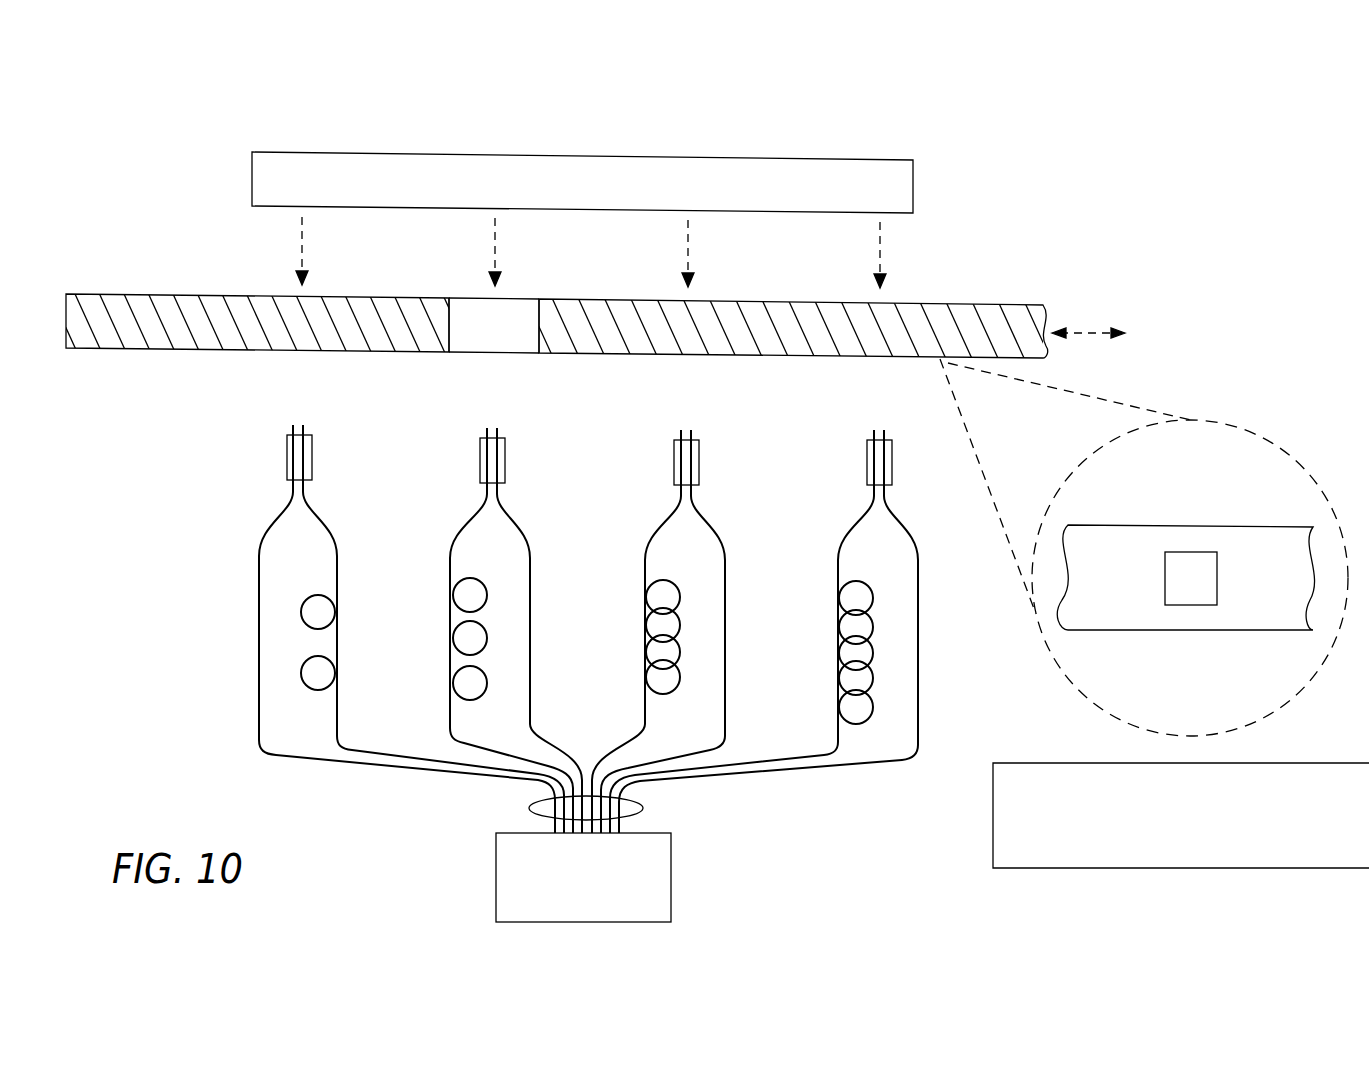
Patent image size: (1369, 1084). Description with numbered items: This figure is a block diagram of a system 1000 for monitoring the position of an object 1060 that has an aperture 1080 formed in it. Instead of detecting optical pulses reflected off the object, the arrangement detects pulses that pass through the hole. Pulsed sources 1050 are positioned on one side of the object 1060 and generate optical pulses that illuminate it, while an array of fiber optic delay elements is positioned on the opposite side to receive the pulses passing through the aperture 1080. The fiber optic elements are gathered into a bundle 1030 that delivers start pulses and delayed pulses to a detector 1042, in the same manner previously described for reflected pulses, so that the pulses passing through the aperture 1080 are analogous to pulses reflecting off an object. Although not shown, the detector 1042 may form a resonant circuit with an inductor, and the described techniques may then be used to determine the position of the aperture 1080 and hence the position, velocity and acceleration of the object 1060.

The time-resolved detection system 1000 is at (1228, 179).
The pulsed sources 1050 is at (847, 168).
The object 1060 is at (986, 309).
The aperture 1080 is at (478, 336).
The fiber bundle 1030 is at (643, 806).
The detector 1042 is at (672, 882).